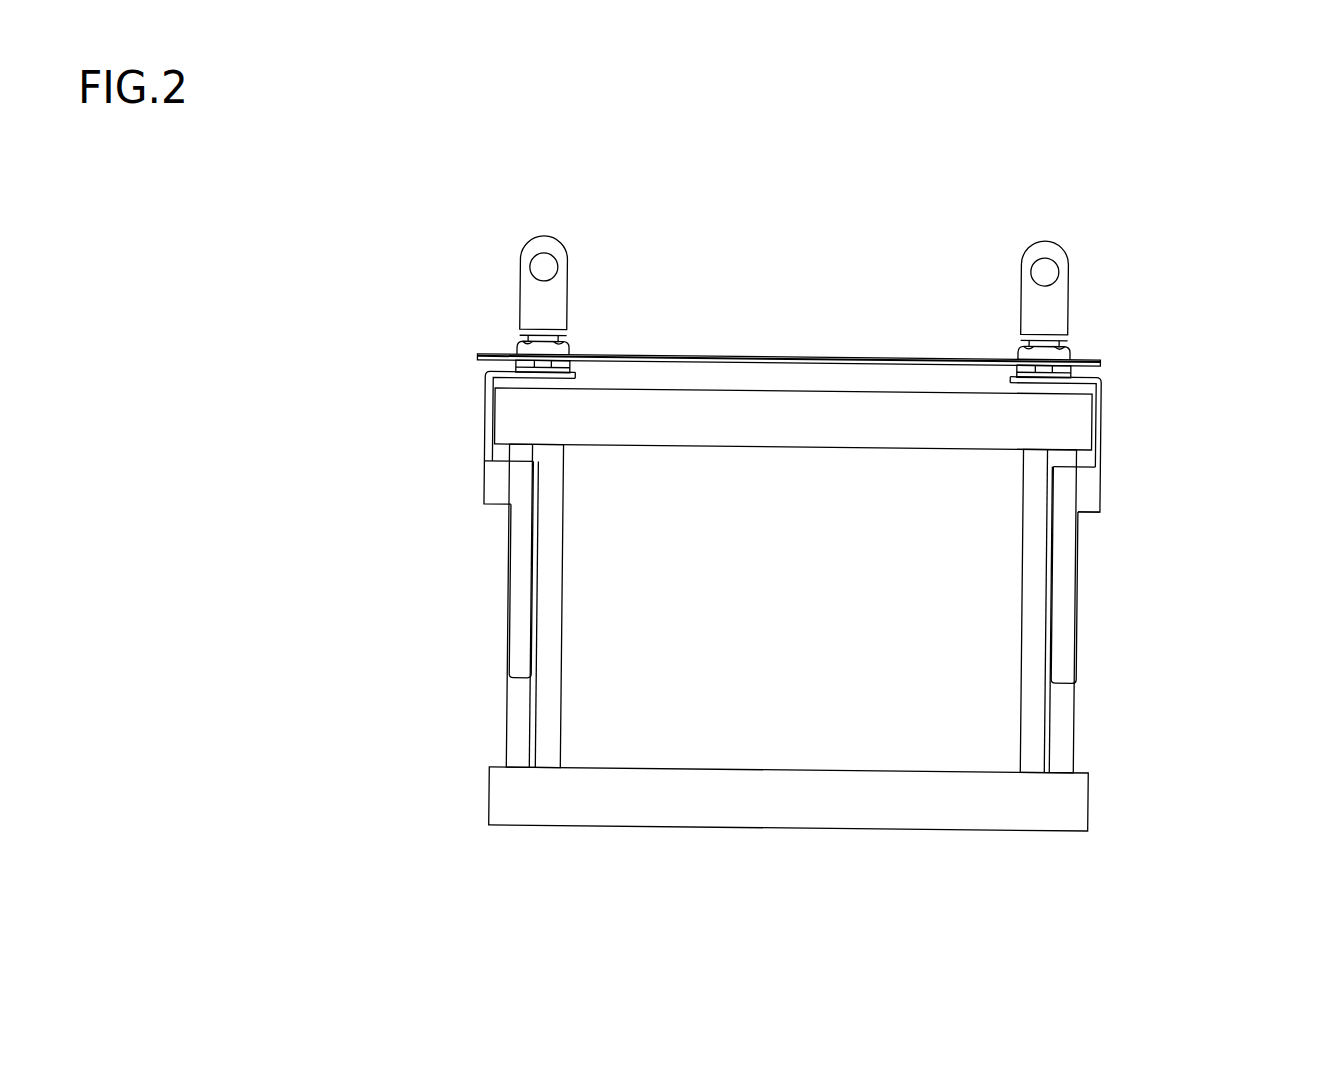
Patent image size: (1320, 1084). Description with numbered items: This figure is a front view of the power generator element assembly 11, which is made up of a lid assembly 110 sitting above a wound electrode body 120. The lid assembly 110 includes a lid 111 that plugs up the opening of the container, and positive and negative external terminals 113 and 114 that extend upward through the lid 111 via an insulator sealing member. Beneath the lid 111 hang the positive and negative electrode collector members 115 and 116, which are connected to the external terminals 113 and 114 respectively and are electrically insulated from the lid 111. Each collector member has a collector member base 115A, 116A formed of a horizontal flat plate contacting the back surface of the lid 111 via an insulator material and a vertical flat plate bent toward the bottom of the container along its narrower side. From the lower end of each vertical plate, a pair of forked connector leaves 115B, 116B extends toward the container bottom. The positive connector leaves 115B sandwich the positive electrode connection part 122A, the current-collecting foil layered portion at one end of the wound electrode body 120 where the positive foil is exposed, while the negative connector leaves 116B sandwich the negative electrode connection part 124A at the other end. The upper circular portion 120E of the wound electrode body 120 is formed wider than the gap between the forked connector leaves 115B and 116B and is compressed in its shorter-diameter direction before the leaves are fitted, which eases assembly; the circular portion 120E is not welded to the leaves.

The power generator element assembly 11 is at (916, 271).
The lid assembly 110 is at (1099, 355).
The lid 111 is at (772, 358).
The positive external terminal 113 is at (562, 287).
The negative external terminal 114 is at (1056, 244).
The positive electrode collector member 115 is at (410, 563).
The collector member base 115A is at (489, 488).
The forked connector leaves 115B is at (372, 461).
The negative electrode collector member 116 is at (1182, 576).
The collector member base 116A is at (1094, 485).
The forked connector leaves 116B is at (1072, 614).
The wound electrode body 120 is at (758, 740).
The circular portion 120E is at (1118, 392).
The positive electrode connection part 122A is at (513, 719).
The negative electrode connection part 124A is at (1063, 727).